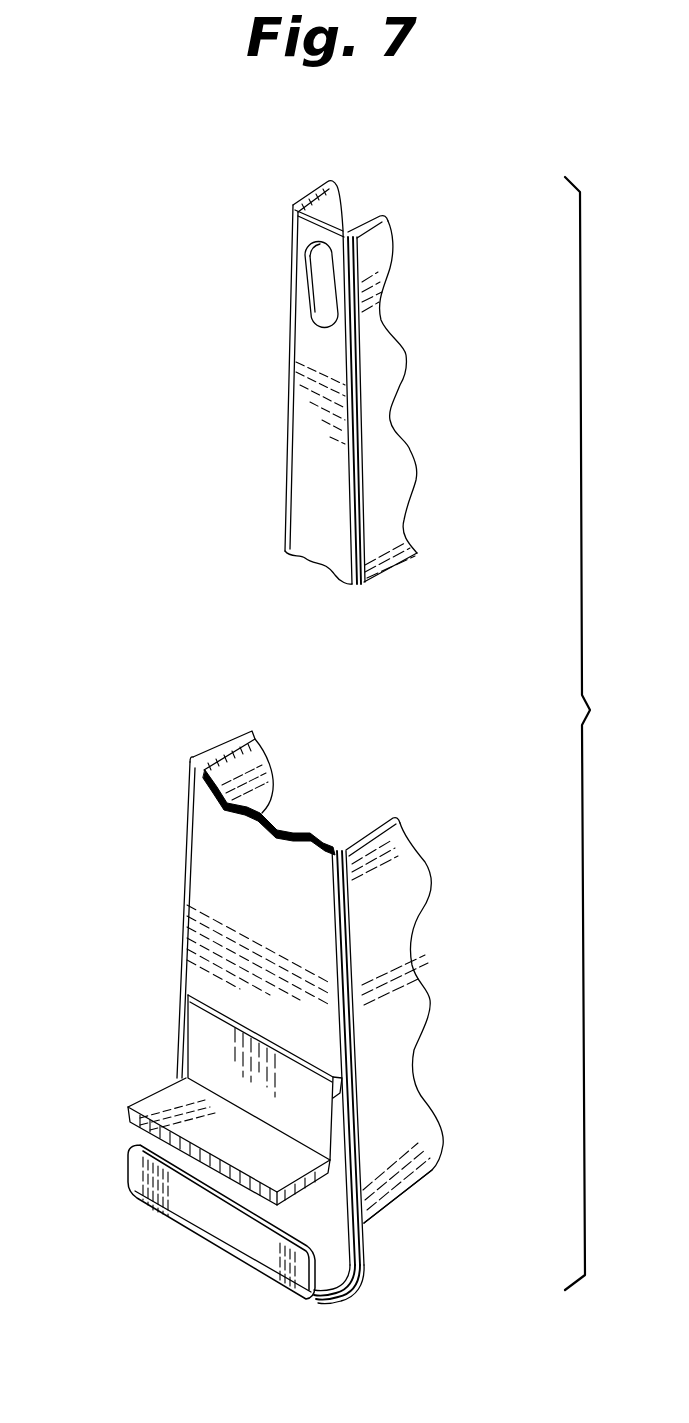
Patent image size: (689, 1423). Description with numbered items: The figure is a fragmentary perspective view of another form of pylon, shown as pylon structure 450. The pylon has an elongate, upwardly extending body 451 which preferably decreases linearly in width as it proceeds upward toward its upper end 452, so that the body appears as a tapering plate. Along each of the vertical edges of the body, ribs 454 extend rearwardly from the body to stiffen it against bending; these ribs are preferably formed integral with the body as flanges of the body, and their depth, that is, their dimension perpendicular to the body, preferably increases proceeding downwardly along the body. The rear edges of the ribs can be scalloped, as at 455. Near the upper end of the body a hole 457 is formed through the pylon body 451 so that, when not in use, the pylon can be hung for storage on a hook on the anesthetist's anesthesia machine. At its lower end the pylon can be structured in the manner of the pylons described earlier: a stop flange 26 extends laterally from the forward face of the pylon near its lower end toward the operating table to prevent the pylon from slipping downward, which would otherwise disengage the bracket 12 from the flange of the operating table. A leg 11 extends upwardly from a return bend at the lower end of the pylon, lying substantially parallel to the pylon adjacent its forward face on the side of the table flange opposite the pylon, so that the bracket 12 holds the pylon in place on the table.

The pylon structure 450 is at (160, 762).
The body 451 is at (307, 445).
The upper end 452 is at (345, 228).
The ribs 454 is at (400, 483).
The scalloped rear edge 455 is at (427, 1091).
The hole 457 is at (320, 275).
The stop flange 26 is at (168, 1100).
The leg 11 is at (137, 1178).
The bracket 12 is at (332, 1299).